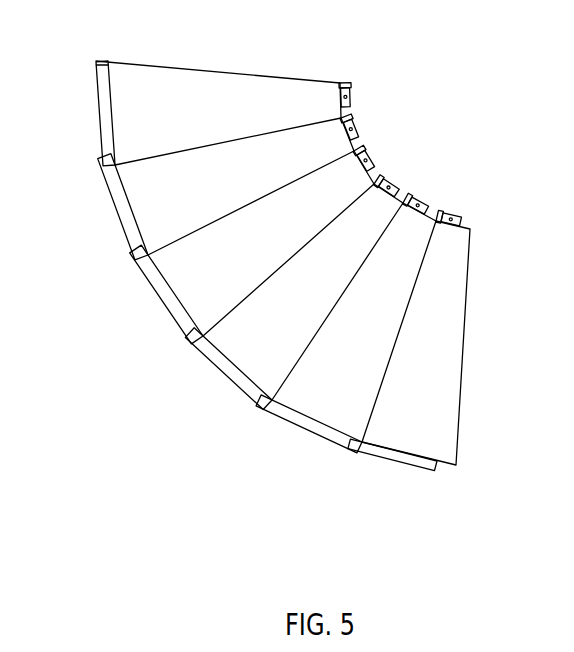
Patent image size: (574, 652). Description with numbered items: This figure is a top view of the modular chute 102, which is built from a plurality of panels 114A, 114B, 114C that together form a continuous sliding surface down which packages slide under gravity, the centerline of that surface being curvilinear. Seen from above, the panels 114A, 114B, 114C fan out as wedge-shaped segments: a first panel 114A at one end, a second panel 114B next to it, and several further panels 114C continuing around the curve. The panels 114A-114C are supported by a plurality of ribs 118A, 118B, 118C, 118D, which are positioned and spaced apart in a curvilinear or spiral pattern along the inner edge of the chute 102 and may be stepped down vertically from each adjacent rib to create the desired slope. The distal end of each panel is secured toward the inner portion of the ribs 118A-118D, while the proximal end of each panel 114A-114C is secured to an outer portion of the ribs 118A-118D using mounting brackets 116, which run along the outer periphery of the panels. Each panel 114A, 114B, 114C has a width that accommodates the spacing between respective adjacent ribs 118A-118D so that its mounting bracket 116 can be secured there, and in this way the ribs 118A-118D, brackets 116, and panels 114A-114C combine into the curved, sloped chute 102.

The modular chute 102 is at (486, 74).
The panel 114A is at (235, 119).
The panel 114B is at (235, 189).
The panel 114C is at (265, 258).
The mounting bracket 116 is at (102, 133).
The rib 118A is at (347, 84).
The rib 118B is at (346, 118).
The rib 118C is at (438, 220).
The rib 118D is at (459, 222).